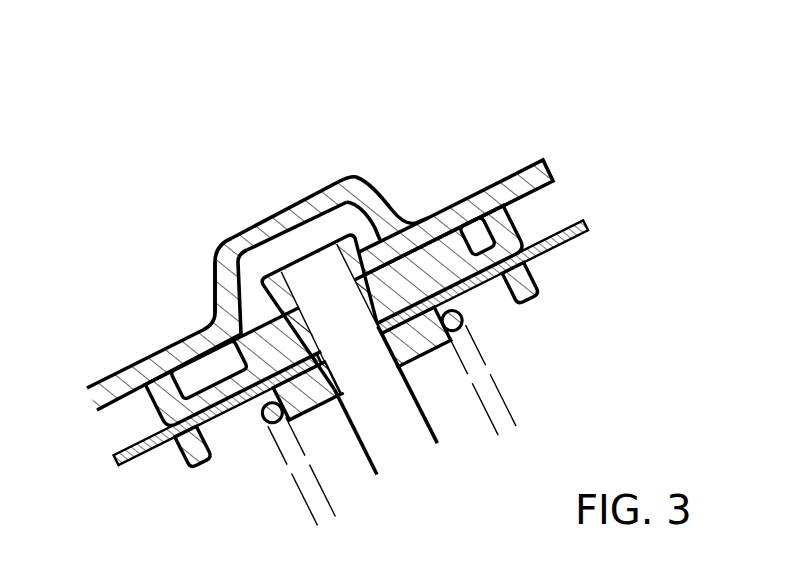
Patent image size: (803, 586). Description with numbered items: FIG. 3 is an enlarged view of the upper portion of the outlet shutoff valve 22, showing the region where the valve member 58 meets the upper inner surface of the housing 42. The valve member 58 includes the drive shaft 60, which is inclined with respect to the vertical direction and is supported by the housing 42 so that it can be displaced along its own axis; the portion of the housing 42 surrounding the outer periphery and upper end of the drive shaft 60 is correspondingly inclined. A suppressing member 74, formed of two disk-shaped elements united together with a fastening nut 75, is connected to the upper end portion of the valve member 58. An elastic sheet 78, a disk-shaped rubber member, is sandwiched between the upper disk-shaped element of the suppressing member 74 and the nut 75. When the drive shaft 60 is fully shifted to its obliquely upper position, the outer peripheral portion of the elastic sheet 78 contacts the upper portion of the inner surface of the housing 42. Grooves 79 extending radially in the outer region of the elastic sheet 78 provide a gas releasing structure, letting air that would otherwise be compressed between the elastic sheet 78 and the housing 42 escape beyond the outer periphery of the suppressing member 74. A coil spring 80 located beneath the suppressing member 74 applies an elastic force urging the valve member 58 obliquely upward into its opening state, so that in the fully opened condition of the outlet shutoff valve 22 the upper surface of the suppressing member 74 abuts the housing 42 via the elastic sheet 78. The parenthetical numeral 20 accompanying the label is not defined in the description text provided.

The outlet shutoff valve 22 is at (577, 143).
The pipe mounting structure 20 is at (397, 298).
The grooves 79 is at (185, 348).
The suppressing member 74 is at (212, 262).
The valve member 58 is at (290, 215).
The elastic sheet 78 is at (340, 185).
The housing 42 is at (381, 187).
The fastening nut 75 is at (337, 317).
The coil spring 80 is at (477, 371).
The drive shaft 60 is at (378, 400).